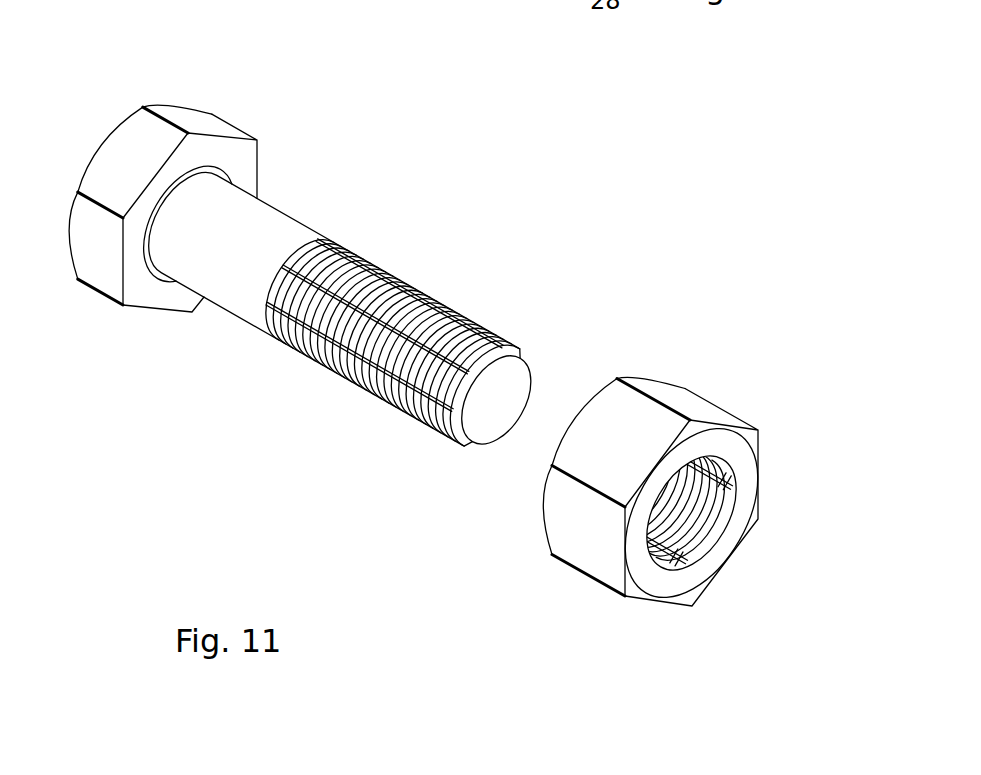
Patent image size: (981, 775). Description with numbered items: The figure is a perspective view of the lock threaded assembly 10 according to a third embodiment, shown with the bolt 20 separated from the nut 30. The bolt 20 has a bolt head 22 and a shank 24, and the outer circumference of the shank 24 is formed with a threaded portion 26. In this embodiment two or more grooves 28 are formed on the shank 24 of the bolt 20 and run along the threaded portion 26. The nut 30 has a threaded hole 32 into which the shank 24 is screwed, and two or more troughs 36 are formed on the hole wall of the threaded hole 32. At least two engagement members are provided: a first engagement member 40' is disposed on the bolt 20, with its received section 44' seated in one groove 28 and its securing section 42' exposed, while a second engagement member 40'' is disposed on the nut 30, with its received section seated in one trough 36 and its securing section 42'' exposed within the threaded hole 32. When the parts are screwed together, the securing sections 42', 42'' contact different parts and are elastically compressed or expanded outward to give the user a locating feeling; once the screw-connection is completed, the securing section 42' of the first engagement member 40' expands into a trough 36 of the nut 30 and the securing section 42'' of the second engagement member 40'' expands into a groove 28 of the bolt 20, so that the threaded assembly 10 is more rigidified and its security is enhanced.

The lock threaded assembly 10 is at (653, 160).
The bolt 20 is at (417, 172).
The bolt head 22 is at (123, 148).
The shank 24 is at (272, 220).
The threaded portion 26 is at (415, 288).
The groove 28 is at (518, 352).
The nut 30 is at (736, 376).
The threaded hole 32 is at (722, 527).
The trough 36 is at (725, 488).
The first engagement member 40' is at (359, 409).
The securing section of the first engagement member 42' is at (375, 378).
The received section of the first engagement member 44' is at (367, 346).
The second engagement member 40'' is at (770, 502).
The securing section of the second engagement member 42'' is at (751, 492).